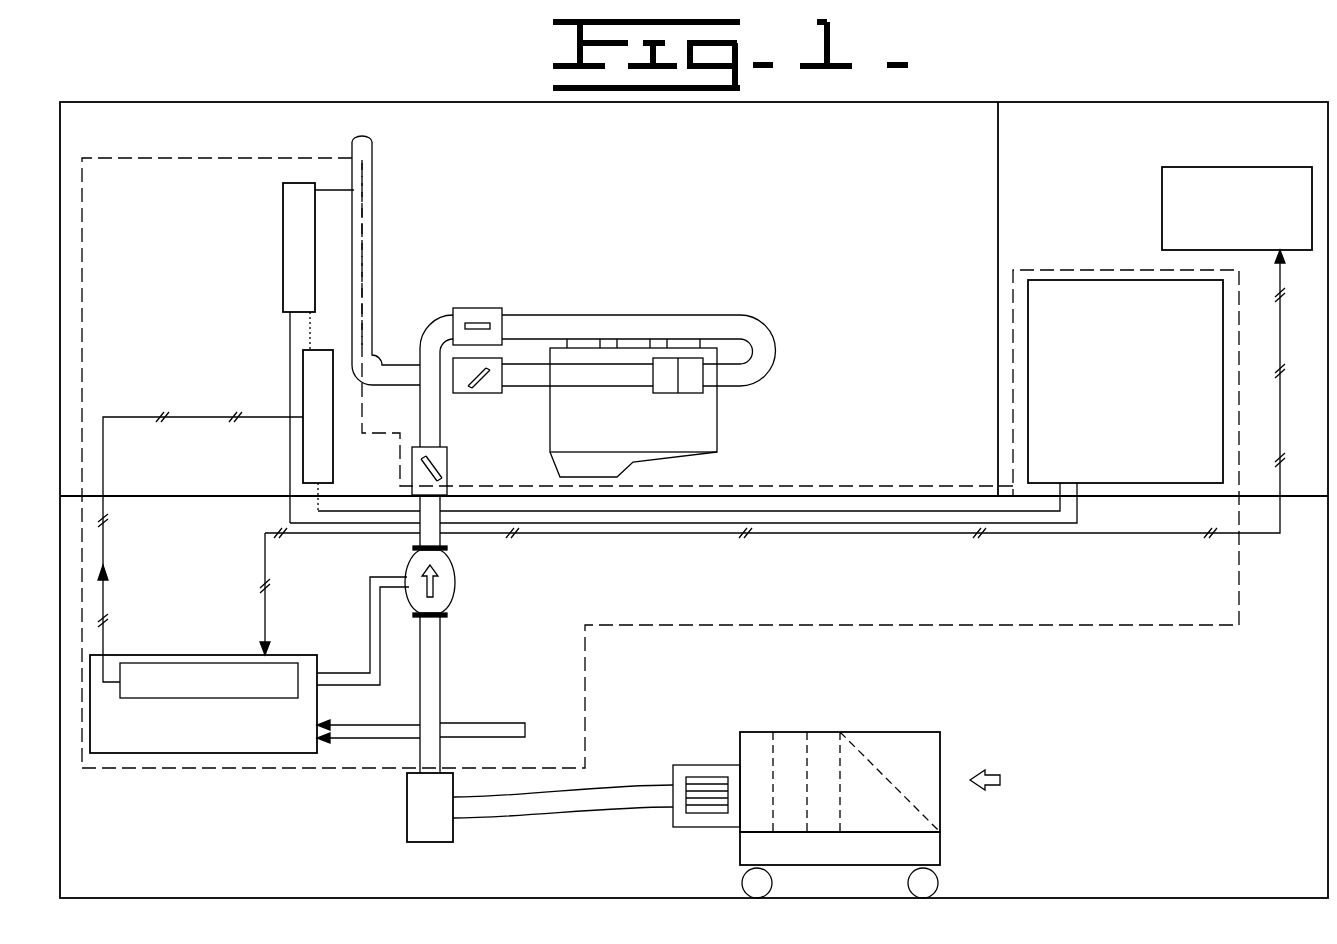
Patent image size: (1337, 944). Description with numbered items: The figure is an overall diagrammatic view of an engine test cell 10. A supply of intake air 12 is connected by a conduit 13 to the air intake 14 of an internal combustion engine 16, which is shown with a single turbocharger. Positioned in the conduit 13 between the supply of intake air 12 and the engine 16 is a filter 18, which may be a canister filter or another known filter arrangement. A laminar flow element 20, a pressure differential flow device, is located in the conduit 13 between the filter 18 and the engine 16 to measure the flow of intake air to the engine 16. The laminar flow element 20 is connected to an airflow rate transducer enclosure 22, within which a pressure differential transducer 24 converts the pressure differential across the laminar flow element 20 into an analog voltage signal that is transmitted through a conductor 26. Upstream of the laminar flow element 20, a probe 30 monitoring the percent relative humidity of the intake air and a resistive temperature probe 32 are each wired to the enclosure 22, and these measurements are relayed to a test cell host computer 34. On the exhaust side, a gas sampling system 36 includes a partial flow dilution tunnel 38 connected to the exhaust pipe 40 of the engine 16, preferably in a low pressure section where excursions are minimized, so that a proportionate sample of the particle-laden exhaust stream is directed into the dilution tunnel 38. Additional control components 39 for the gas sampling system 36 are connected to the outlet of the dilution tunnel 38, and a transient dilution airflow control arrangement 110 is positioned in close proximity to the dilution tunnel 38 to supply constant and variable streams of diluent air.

The engine test cell 10 is at (768, 226).
The supply of intake air 12 is at (908, 732).
The conduit 13 is at (715, 314).
The air intake 14 is at (703, 388).
The internal combustion engine 16 is at (717, 430).
The filter 18 is at (418, 818).
The laminar flow element 20 is at (452, 575).
The airflow rate transducer enclosure 22 is at (298, 655).
The pressure differential transducer 24 is at (175, 698).
The conductor 26 is at (103, 547).
The probe 30 is at (442, 740).
The resistive temperature probe 32 is at (415, 740).
The test cell host computer 34 is at (1235, 167).
The gas sampling system 36 is at (1083, 625).
The partial flow dilution tunnel 38 is at (283, 196).
The control components 39 is at (1107, 280).
The exhaust pipe 40 is at (370, 280).
The transient dilution airflow control arrangement 110 is at (333, 455).